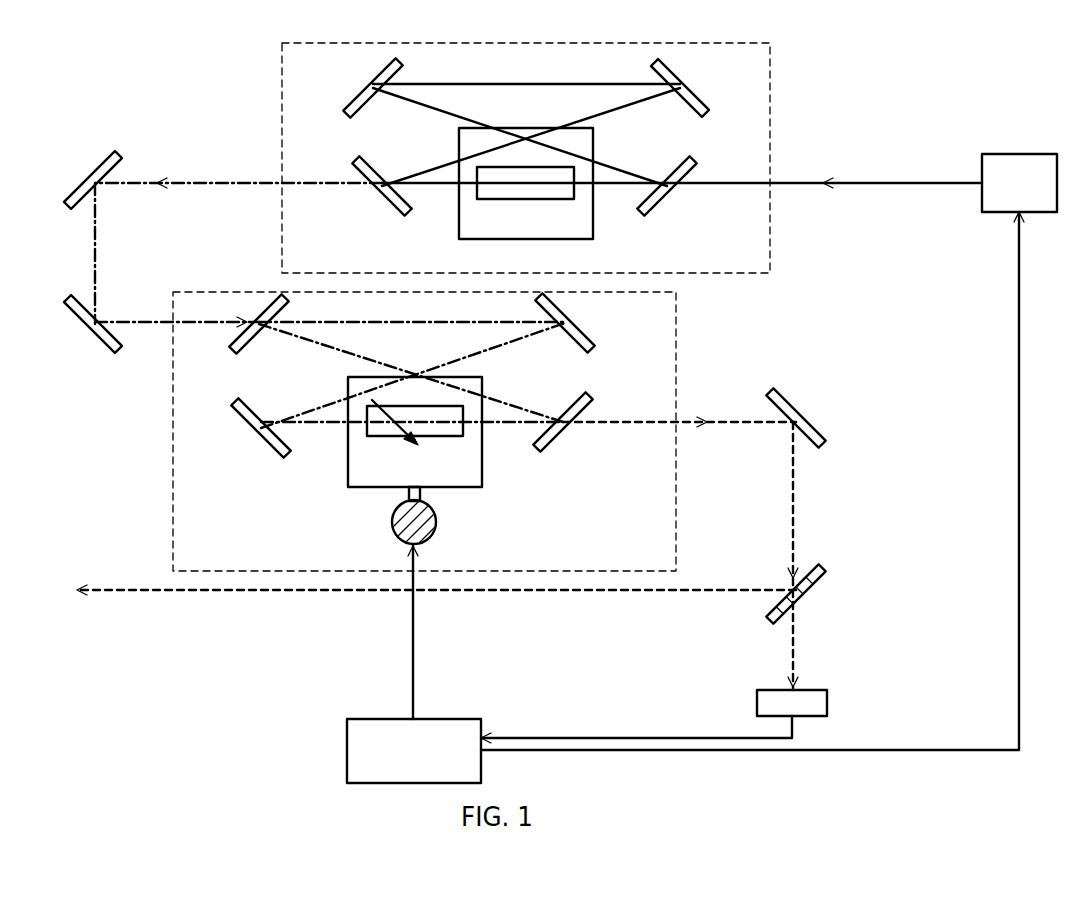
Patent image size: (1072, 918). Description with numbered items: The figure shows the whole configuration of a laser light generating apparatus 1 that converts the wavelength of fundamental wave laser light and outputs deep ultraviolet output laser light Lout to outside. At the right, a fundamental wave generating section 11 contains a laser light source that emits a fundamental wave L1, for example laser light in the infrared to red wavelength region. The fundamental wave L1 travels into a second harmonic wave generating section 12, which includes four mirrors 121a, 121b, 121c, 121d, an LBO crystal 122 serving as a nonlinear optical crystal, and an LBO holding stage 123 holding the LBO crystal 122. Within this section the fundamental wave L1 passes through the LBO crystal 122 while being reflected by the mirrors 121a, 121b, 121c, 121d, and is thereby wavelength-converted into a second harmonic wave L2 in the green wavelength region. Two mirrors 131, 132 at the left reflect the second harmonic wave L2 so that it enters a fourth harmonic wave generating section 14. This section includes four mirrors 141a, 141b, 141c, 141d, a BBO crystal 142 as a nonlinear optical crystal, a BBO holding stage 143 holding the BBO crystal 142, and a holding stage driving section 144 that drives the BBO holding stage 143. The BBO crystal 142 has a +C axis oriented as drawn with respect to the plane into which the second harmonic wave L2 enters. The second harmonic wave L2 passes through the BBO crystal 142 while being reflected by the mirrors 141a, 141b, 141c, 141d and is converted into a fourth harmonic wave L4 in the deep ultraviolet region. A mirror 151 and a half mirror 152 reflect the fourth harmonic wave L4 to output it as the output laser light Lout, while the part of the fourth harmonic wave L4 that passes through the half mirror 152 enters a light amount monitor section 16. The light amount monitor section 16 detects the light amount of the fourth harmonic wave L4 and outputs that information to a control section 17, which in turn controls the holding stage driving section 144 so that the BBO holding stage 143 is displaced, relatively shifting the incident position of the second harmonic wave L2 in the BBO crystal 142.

The laser light generating apparatus 1 is at (796, 32).
The fundamental wave generating section 11 is at (1018, 153).
The second harmonic wave generating section 12 is at (497, 43).
The mirror 121a is at (656, 206).
The mirror 121b is at (392, 208).
The mirror 121c is at (684, 78).
The mirror 121d is at (366, 84).
The LBO crystal 122 is at (500, 200).
The LBO holding stage 123 is at (472, 242).
The mirror 131 is at (86, 172).
The mirror 132 is at (86, 334).
The fourth harmonic wave generating section 14 is at (676, 323).
The mirror 141a is at (232, 350).
The mirror 141b is at (588, 350).
The mirror 141c is at (266, 446).
The mirror 141d is at (554, 444).
The BBO crystal 142 is at (424, 436).
The BBO holding stage 143 is at (348, 474).
The holding stage driving section 144 is at (438, 520).
The mirror 151 is at (806, 406).
The half mirror 152 is at (802, 598).
The light amount monitor section 16 is at (812, 686).
The control section 17 is at (470, 718).
The fundamental wave L1 is at (884, 184).
The second harmonic wave L2 is at (198, 180).
The fourth harmonic wave L4 is at (748, 430).
The output laser light Lout is at (150, 594).